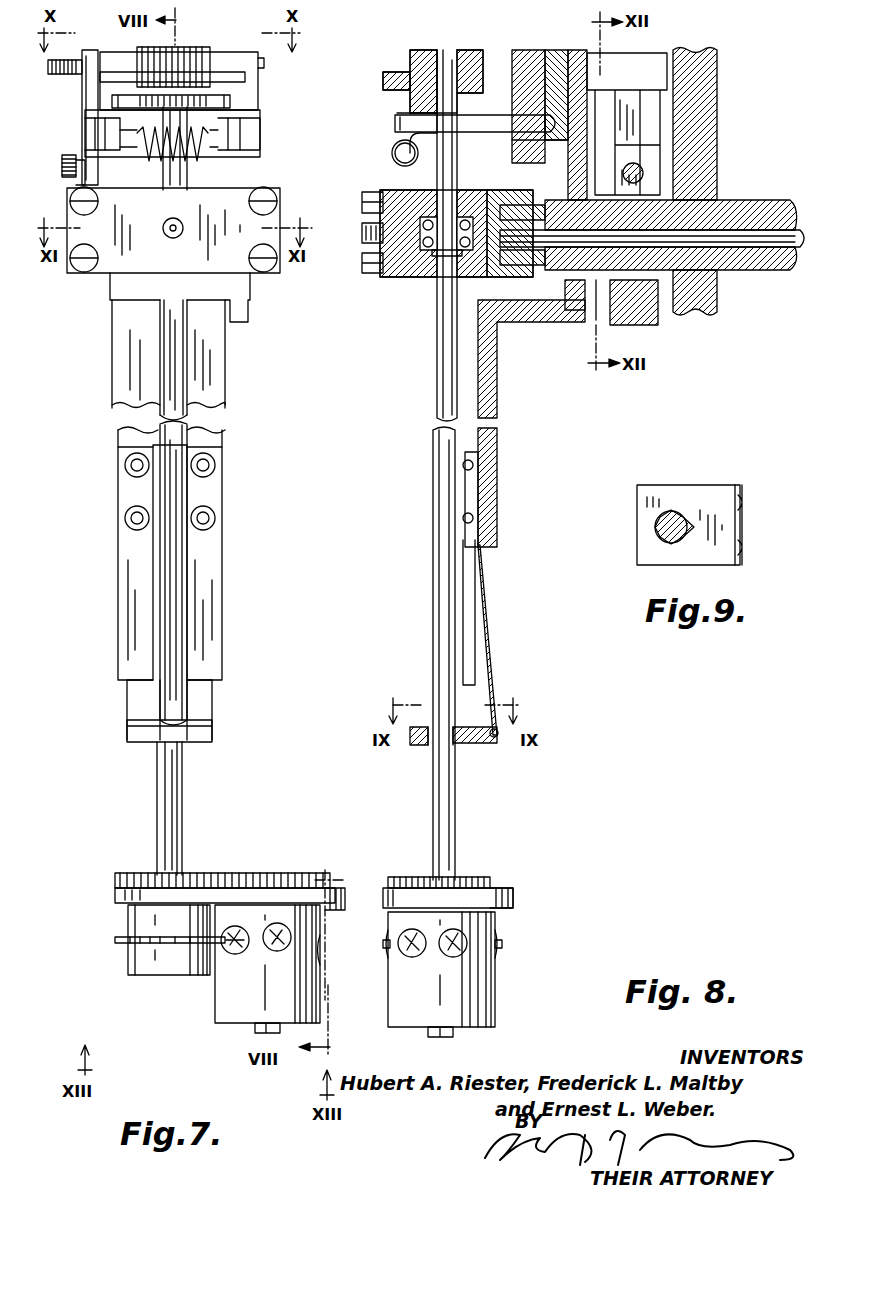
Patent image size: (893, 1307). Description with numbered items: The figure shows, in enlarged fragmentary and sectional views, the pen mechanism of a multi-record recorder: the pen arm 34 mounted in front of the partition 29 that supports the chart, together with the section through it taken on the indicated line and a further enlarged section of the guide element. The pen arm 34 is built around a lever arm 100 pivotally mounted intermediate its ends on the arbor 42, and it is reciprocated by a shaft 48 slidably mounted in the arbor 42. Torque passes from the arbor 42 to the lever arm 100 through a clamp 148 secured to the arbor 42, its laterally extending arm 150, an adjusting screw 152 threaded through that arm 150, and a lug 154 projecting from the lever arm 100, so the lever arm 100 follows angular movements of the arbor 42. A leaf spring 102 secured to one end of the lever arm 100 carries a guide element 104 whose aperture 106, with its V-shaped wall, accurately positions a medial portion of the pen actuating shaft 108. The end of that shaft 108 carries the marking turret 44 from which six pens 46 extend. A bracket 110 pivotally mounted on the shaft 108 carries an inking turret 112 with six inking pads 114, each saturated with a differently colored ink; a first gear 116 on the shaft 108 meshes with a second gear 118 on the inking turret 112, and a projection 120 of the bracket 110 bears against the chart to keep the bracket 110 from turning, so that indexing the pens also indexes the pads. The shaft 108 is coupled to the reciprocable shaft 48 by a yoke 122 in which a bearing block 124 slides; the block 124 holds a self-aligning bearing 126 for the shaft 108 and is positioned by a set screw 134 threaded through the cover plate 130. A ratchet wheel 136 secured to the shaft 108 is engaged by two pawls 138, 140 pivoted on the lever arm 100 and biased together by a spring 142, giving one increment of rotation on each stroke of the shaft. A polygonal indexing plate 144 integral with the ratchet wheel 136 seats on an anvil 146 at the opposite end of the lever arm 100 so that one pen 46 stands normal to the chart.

In FIG. 8, the partition 29 is at (710, 78).
In FIG. 7, the pen arm 34 is at (248, 578).
In FIG. 8, the pen arm 34 is at (521, 473).
In FIG. 8, the arbor 42 is at (730, 202).
In FIG. 7, the marking turret 44 is at (128, 917).
In FIG. 7, the pens 46 is at (175, 946).
In FIG. 8, the pens 46 is at (385, 948).
In FIG. 8, the shaft 48 is at (760, 232).
In FIG. 7, the lever arm 100 is at (218, 378).
In FIG. 8, the lever arm 100 is at (497, 345).
In FIG. 7, the leaf spring 102 is at (200, 697).
In FIG. 8, the leaf spring 102 is at (487, 628).
In FIG. 7, the guide element 104 is at (205, 738).
In FIG. 8, the guide element 104 is at (483, 745).
In FIG. 9, the guide element 104 is at (710, 492).
In FIG. 8, the aperture 106 is at (455, 745).
In FIG. 9, the aperture 106 is at (655, 532).
In FIG. 7, the pen actuating shaft 108 is at (170, 790).
In FIG. 8, the pen actuating shaft 108 is at (440, 818).
In FIG. 9, the pen actuating shaft 108 is at (673, 510).
In FIG. 7, the bracket 110 is at (120, 893).
In FIG. 8, the bracket 110 is at (385, 890).
In FIG. 7, the inking turret 112 is at (267, 969).
In FIG. 8, the inking turret 112 is at (480, 990).
In FIG. 7, the inking pads 114 is at (270, 950).
In FIG. 8, the inking pads 114 is at (453, 958).
In FIG. 7, the first gear 116 is at (192, 872).
In FIG. 7, the second gear 118 is at (255, 873).
In FIG. 8, the second gear 118 is at (480, 877).
In FIG. 7, the projection 120 is at (340, 908).
In FIG. 8, the projection 120 is at (513, 892).
In FIG. 8, the yoke 122 is at (525, 205).
In FIG. 8, the bearing block 124 is at (465, 192).
In FIG. 8, the self-aligning bearing 126 is at (425, 258).
In FIG. 7, the cover plate 130 is at (243, 193).
In FIG. 8, the cover plate 130 is at (385, 280).
In FIG. 7, the set screw 134 is at (173, 218).
In FIG. 8, the set screw 134 is at (372, 245).
In FIG. 7, the ratchet wheel 136 is at (217, 98).
In FIG. 8, the ratchet wheel 136 is at (400, 113).
In FIG. 7, the pawl 138 is at (243, 120).
In FIG. 7, the pawl 140 is at (88, 127).
In FIG. 8, the pawl 140 is at (485, 125).
In FIG. 7, the spring 142 is at (205, 137).
In FIG. 8, the spring 142 is at (395, 143).
In FIG. 8, the indexing plate 144 is at (395, 72).
In FIG. 8, the anvil 146 is at (555, 62).
In FIG. 7, the clamp 148 is at (78, 160).
In FIG. 8, the clamp 148 is at (658, 322).
In FIG. 7, the arm 150 is at (90, 50).
In FIG. 7, the adjusting screw 152 is at (58, 72).
In FIG. 8, the lug 154 is at (645, 60).